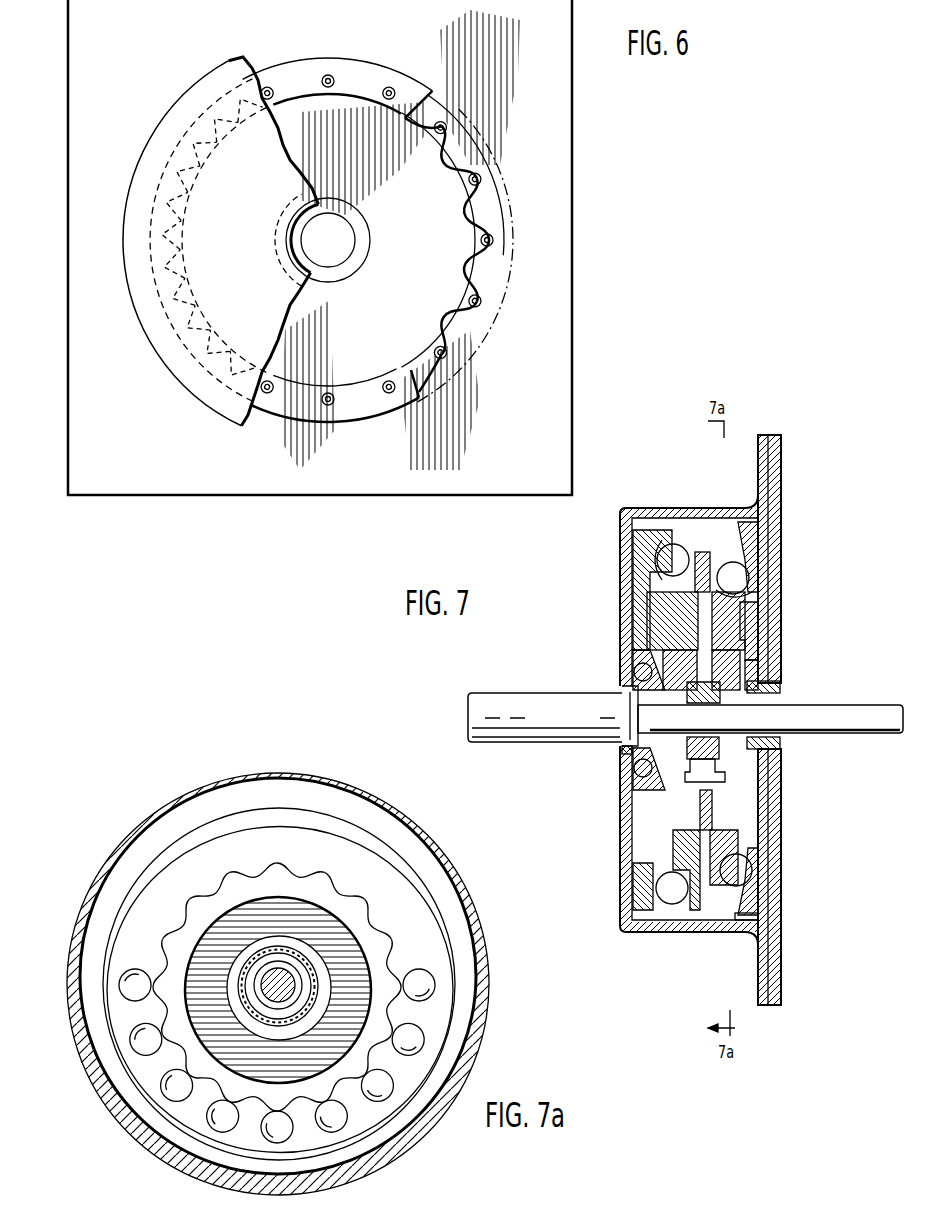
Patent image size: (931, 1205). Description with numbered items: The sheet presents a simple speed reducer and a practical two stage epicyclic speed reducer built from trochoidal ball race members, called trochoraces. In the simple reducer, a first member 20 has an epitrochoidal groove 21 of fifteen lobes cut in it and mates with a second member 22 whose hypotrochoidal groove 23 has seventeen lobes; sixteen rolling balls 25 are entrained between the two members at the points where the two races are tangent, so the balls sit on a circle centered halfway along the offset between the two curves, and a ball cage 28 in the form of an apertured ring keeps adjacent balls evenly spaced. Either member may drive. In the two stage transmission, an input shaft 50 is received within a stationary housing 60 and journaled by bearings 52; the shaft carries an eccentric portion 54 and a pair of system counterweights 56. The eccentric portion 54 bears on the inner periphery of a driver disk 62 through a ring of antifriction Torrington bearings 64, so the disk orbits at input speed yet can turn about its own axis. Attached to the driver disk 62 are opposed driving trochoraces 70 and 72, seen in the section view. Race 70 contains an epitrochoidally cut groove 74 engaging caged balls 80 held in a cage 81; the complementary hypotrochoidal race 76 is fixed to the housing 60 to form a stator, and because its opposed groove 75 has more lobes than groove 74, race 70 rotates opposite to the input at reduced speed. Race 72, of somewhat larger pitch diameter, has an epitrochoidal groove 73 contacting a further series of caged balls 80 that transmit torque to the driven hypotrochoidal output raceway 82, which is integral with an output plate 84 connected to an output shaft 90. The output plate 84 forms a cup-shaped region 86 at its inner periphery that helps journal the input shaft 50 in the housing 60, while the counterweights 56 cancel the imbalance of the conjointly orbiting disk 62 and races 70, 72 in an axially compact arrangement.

In FIG. 6, the first member 20 is at (142, 184).
In FIG. 6, the epitrochoidal groove 21 is at (206, 178).
In FIG. 6, the second member 22 is at (549, 142).
In FIG. 6, the hypotrochoidal groove 23 is at (475, 226).
In FIG. 6, the rolling balls 25 is at (478, 298).
In FIG. 6, the ball cage 28 is at (412, 400).
In FIG. 7, the input shaft 50 is at (880, 712).
In FIG. 7a, the input shaft 50 is at (290, 978).
In FIG. 7, the bearings 52 is at (630, 754).
In FIG. 7, the eccentric portion 54 is at (718, 763).
In FIG. 7a, the eccentric portion 54 is at (285, 1010).
In FIG. 7, the system counterweights 56 is at (640, 654).
In FIG. 7, the stationary housing 60 is at (782, 575).
In FIG. 7, the driver disk 62 is at (698, 540).
In FIG. 7a, the driver disk 62 is at (436, 860).
In FIG. 7, the Torrington bearings 64 is at (690, 775).
In FIG. 7a, the Torrington bearings 64 is at (248, 1004).
In FIG. 7, the driving race 70 is at (770, 630).
In FIG. 7a, the driving race 70 is at (405, 893).
In FIG. 7, the second driving race 72 is at (680, 612).
In FIG. 7, the epitrochoidal groove of race 72 73 is at (678, 582).
In FIG. 7, the epitrochoidally cut groove 74 is at (768, 607).
In FIG. 7a, the epitrochoidally cut groove 74 is at (152, 963).
In FIG. 7, the opposed groove 75 is at (765, 572).
In FIG. 7, the hypotrochoidal race 76 is at (763, 540).
In FIG. 7, the balls 80 is at (730, 565).
In FIG. 7a, the balls 80 is at (170, 1092).
In FIG. 7, the cage 81 is at (733, 900).
In FIG. 7, the output raceway 82 is at (655, 532).
In FIG. 7, the output plate 84 is at (630, 548).
In FIG. 7, the cup-shaped region 86 is at (636, 765).
In FIG. 7, the output shaft 90 is at (524, 705).